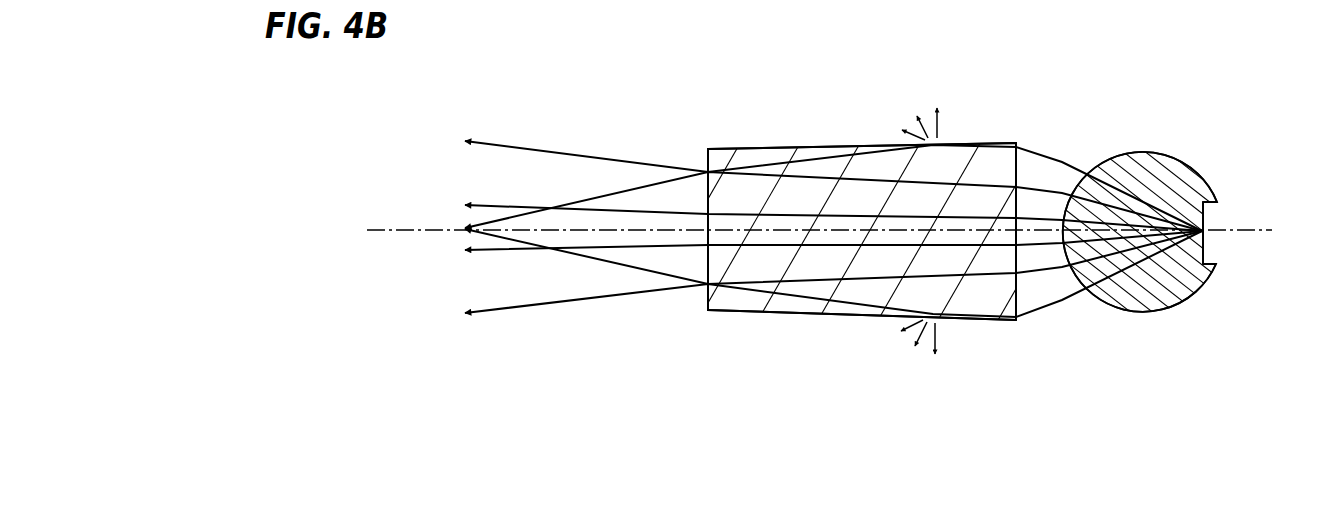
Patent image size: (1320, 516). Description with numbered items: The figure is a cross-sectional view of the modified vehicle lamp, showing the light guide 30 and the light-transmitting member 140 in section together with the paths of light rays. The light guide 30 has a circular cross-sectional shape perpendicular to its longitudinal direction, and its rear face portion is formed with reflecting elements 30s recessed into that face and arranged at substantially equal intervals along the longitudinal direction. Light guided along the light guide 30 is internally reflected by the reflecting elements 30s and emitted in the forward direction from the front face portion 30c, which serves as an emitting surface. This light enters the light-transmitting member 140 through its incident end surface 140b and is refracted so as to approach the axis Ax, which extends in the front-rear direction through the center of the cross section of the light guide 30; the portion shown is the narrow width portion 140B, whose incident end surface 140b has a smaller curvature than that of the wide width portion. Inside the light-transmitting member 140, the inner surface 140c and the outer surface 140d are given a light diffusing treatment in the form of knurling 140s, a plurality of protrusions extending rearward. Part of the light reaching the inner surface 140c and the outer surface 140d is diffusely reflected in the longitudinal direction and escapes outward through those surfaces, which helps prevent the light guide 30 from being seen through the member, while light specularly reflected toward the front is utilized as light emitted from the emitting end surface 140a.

The axis Ax is at (430, 227).
The light-transmitting member 140 is at (989, 139).
The emitting end surface 140a is at (707, 255).
The incident end surface 140b is at (1016, 257).
The inner surface 140c is at (830, 147).
The outer surface 140d is at (827, 313).
The knurling 140s is at (868, 142).
The narrow width portion 140B is at (797, 188).
The light guide 30 is at (1180, 151).
The front face portion 30c is at (1125, 152).
The reflecting elements 30s is at (1204, 246).